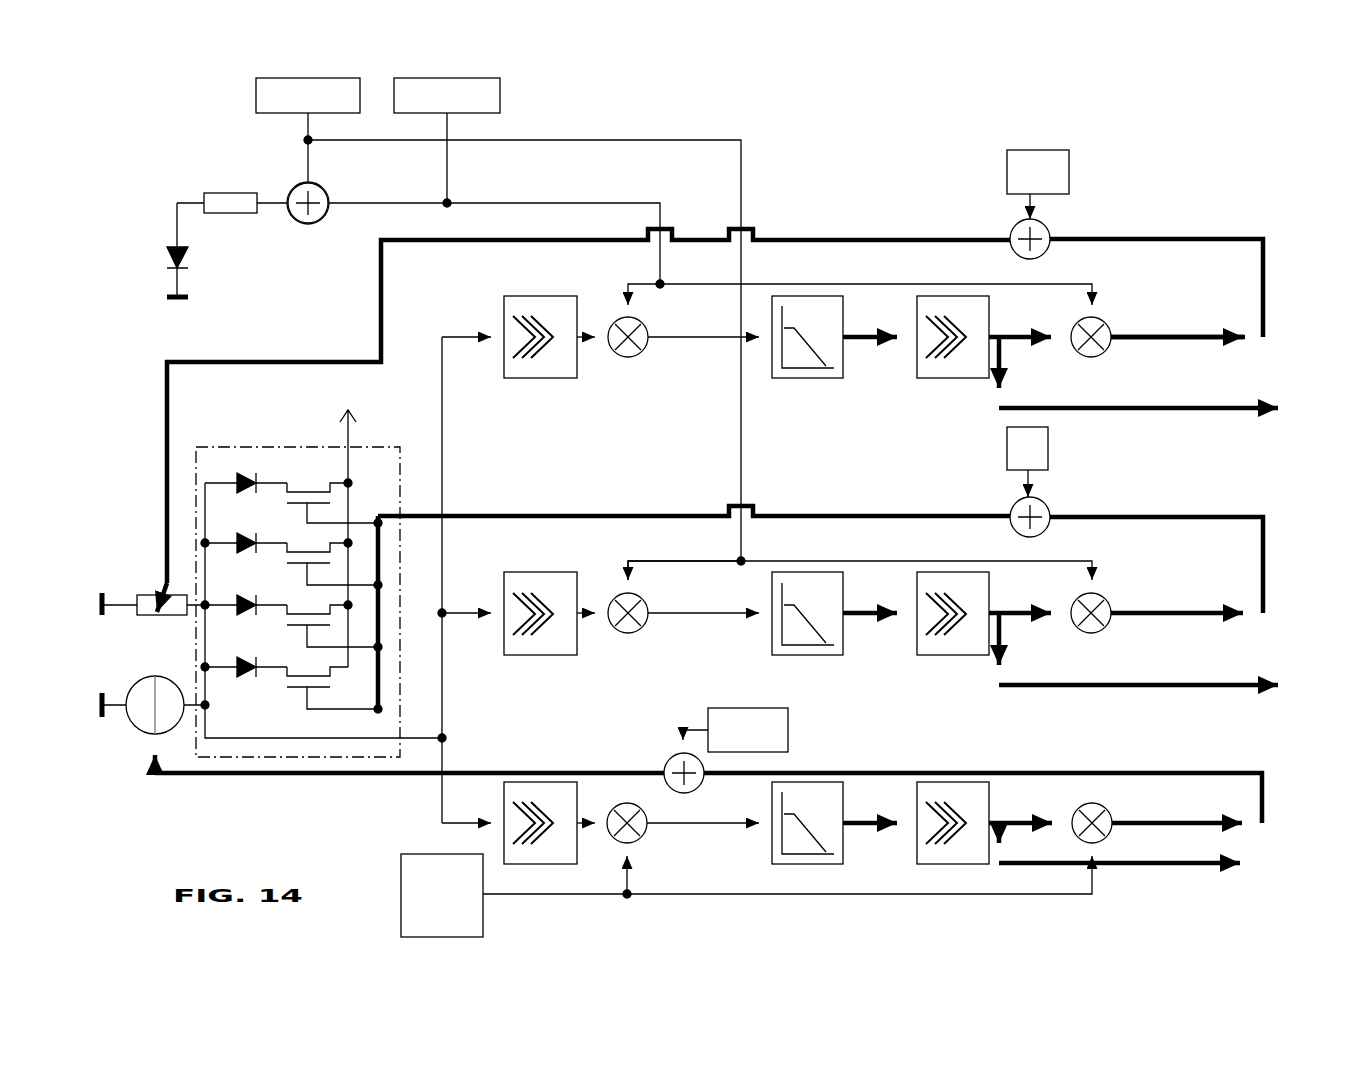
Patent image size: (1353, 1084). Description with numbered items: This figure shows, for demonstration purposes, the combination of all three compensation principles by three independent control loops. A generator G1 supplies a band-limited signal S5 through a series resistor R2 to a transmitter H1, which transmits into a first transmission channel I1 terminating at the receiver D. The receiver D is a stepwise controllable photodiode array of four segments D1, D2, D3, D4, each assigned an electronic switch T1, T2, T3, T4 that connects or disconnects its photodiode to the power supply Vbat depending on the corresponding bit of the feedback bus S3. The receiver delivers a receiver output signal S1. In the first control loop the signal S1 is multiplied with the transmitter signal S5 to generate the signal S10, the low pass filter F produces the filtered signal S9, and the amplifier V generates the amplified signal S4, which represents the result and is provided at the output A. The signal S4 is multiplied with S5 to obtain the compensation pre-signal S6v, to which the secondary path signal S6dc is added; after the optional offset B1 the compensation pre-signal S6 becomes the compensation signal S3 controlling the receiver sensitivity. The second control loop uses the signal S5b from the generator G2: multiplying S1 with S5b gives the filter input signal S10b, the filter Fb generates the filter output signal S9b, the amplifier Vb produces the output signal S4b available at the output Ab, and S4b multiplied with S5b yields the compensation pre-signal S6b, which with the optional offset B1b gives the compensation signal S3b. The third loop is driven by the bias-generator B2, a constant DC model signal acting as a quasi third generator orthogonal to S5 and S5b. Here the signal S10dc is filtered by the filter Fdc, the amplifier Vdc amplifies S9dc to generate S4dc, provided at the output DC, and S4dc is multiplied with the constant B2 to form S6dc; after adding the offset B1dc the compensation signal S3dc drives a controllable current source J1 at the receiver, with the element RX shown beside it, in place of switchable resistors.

The generator G1 is at (308, 130).
The generator G2 is at (447, 142).
The transmitter signal S5 is at (700, 349).
The signal S5b is at (710, 240).
The series resistor R2 is at (232, 191).
The transmitter H1 is at (153, 250).
The first transmission channel I1 is at (240, 436).
The compensation signal S3b is at (583, 412).
The offset B1b is at (1038, 204).
The compensation pre-signal S6b is at (1156, 293).
The filter input signal S10b is at (703, 349).
The filter Fb is at (807, 352).
The filter output signal S9b is at (870, 350).
The amplifier Vb is at (953, 352).
The output signal S4b is at (1022, 362).
The output Ab is at (1166, 408).
The offset B1 is at (1028, 482).
The compensation signal S3 is at (694, 496).
The compensation pre-signal S6 is at (1156, 546).
The filter input signal S10 is at (703, 626).
The filter F is at (807, 629).
The filter output signal S9 is at (870, 627).
The amplifier V is at (953, 629).
The signal of the primary signal path S6v is at (1177, 632).
The amplified signal S4 is at (1017, 639).
The output A is at (1160, 686).
The offset B1dc is at (726, 750).
The compensation signal S3dc is at (708, 789).
The filter input signal S10dc is at (703, 836).
The filter Fdc is at (807, 838).
The filter output signal S9dc is at (875, 837).
The amplifier Vdc is at (953, 838).
The signal S6dc is at (1177, 811).
The amplified signal S4dc is at (1027, 837).
The output DC is at (1161, 866).
The bias-generator B2 is at (746, 895).
The power supply Vbat is at (327, 431).
The photodiode segment D1 is at (246, 477).
The electronic switch T1 is at (326, 490).
The photodiode segment D2 is at (246, 537).
The electronic switch T2 is at (324, 552).
The photodiode segment D3 is at (246, 599).
The electronic switch T3 is at (324, 614).
The photodiode segment D4 is at (246, 661).
The electronic switch T4 is at (324, 676).
The receive resistor RX is at (153, 590).
The controllable current source J1 is at (153, 692).
The receiver D is at (765, 760).
The receiver output signal S1 is at (426, 729).